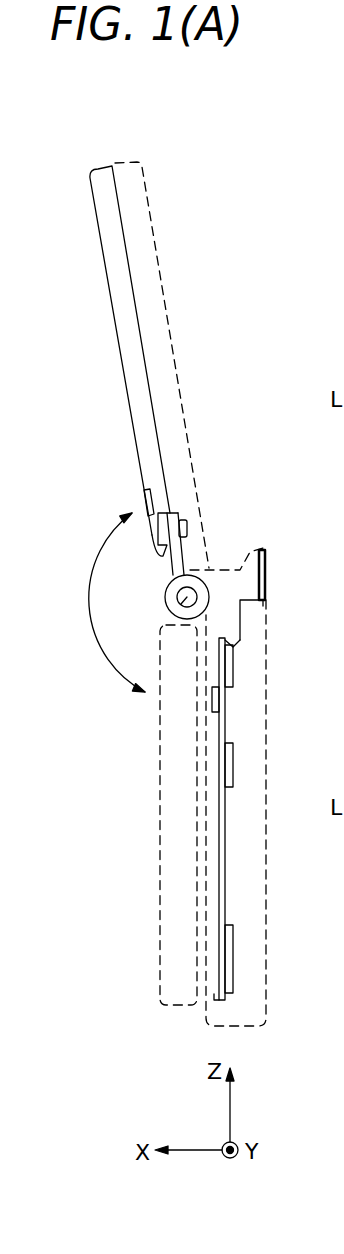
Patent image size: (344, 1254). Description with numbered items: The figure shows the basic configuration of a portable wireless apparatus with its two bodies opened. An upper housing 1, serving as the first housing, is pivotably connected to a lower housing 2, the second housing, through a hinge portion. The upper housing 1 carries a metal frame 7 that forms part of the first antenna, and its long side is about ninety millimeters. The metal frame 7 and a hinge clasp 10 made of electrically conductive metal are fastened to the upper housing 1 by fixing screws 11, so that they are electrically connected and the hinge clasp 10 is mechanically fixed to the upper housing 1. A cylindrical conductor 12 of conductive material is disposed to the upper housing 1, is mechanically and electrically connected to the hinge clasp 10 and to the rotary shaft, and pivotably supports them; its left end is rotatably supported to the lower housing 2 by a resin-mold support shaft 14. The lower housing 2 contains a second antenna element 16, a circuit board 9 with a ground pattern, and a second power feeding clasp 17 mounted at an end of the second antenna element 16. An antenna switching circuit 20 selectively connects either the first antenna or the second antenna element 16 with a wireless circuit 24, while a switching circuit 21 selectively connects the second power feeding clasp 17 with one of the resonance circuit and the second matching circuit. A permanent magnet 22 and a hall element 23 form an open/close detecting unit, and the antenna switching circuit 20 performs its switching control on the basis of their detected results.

The upper housing 1 is at (153, 246).
The lower housing 2 is at (263, 832).
The metal frame 7 is at (100, 204).
The circuit board 9 is at (220, 1000).
The hinge clasp 10 is at (203, 543).
The fixing screws 11 is at (158, 535).
The cylindrical conductor 12 is at (166, 612).
The support shaft 14 is at (165, 592).
The second antenna element 16 is at (266, 558).
The second power feeding clasp 17 is at (241, 620).
The antenna switching circuit 20 is at (233, 766).
The switching circuit 21 is at (233, 682).
The permanent magnet 22 is at (143, 492).
The hall element 23 is at (212, 700).
The wireless circuit 24 is at (233, 948).